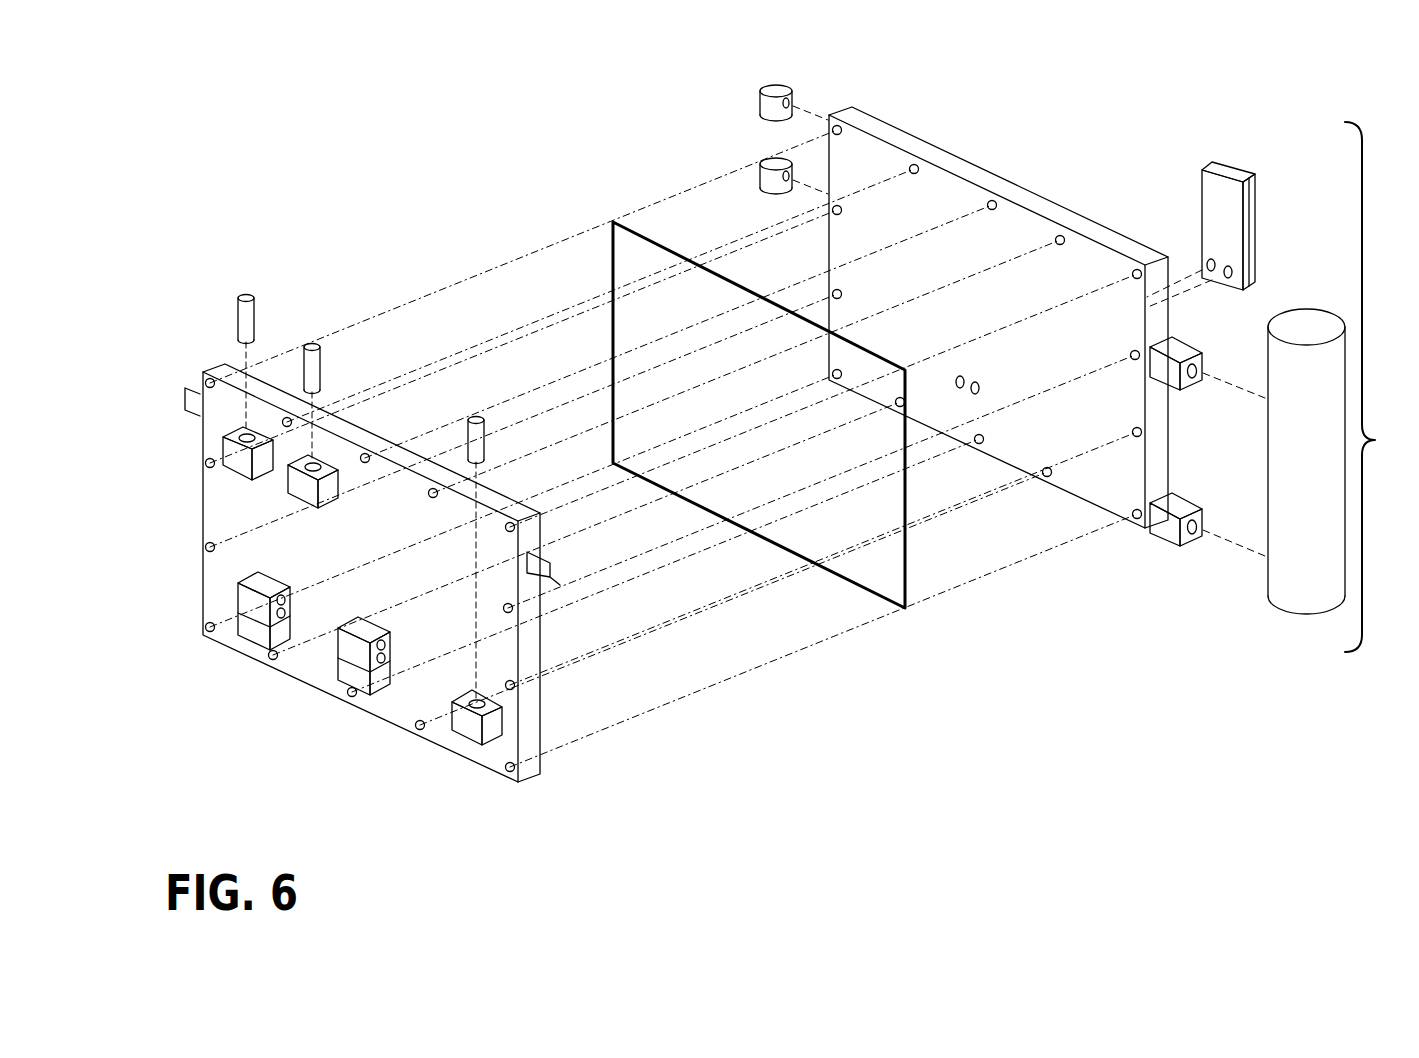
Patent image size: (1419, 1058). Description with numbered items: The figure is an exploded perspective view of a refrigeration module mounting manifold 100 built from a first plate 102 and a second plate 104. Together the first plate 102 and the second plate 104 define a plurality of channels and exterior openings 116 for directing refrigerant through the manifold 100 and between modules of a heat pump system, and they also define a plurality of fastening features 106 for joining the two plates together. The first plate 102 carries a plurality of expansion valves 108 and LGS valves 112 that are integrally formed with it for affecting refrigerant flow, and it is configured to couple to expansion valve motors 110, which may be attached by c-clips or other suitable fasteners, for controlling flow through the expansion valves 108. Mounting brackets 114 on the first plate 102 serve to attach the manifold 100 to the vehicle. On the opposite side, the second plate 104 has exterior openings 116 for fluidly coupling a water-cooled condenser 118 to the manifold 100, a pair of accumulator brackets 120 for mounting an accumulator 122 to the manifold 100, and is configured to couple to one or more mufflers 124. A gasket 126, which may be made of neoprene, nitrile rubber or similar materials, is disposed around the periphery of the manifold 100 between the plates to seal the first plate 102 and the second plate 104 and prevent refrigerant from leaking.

The module mounting manifold 100 is at (1381, 387).
The first plate 102 is at (482, 768).
The second plate 104 is at (1090, 503).
The fastening features 106 is at (416, 728).
The expansion valves 108 is at (302, 493).
The expansion valve motors 110 is at (476, 418).
The LGS valves 112 is at (340, 640).
The mounting brackets 114 is at (186, 398).
The exterior openings 116 is at (978, 445).
The water-cooled condenser 118 is at (1236, 162).
The accumulator brackets 120 is at (1192, 387).
The accumulator 122 is at (1307, 570).
The mufflers 124 is at (762, 173).
The gasket 126 is at (612, 258).